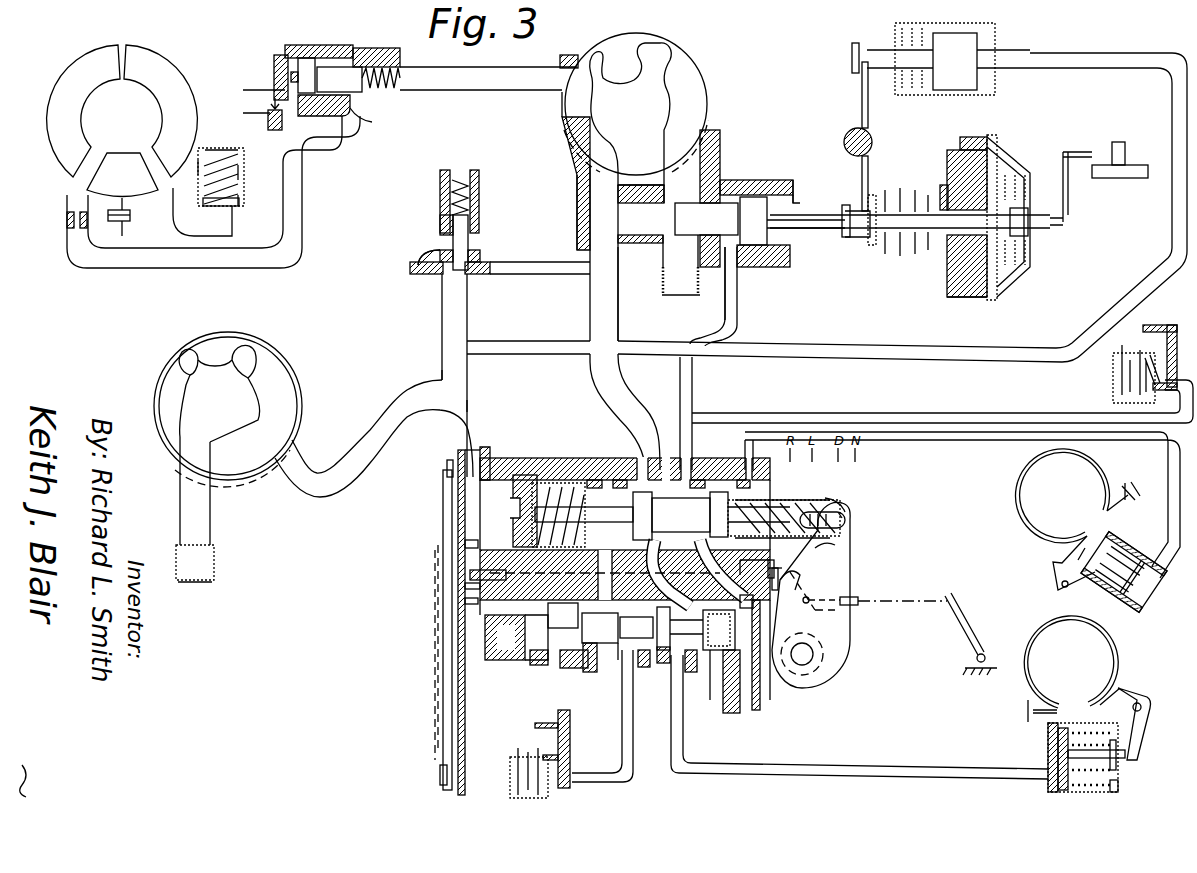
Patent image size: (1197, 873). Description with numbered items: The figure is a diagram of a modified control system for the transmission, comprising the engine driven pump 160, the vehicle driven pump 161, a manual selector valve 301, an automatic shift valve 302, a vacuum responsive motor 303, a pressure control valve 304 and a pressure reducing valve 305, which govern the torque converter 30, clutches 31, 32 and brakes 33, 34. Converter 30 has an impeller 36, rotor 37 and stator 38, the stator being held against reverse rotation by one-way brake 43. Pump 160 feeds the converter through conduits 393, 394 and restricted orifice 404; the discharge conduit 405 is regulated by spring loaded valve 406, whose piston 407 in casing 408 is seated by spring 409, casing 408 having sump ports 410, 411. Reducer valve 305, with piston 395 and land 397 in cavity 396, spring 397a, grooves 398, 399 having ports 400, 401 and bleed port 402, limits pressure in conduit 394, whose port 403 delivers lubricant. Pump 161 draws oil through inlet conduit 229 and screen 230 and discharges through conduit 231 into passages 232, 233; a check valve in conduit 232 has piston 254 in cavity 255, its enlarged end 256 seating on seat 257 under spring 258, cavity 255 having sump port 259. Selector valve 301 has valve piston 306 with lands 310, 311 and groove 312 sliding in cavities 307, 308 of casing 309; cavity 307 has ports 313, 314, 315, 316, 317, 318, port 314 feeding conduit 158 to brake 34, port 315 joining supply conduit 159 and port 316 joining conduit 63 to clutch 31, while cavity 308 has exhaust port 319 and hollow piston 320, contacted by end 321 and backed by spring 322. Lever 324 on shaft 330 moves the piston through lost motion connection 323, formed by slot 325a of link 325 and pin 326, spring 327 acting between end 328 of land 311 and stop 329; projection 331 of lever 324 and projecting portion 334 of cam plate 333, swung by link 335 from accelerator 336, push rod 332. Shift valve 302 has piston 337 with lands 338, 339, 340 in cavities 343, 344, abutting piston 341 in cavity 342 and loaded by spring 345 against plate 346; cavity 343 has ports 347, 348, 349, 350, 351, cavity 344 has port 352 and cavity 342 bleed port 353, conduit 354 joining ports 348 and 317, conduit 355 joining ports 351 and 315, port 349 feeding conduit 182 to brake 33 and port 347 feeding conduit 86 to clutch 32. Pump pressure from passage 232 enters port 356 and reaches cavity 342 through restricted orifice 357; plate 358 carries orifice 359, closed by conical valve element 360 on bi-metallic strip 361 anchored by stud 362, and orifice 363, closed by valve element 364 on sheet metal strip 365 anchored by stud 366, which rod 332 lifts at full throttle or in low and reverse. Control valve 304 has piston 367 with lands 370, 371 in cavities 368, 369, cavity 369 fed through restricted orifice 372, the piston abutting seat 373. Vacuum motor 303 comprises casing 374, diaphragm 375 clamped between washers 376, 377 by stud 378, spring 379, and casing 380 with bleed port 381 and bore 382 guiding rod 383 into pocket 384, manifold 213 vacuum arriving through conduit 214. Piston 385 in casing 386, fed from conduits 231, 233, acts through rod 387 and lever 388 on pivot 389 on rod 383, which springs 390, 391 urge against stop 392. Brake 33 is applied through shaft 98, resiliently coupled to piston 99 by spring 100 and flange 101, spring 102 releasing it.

The hydraulic torque converter 30 is at (170, 45).
The vaned impeller element 36 is at (179, 110).
The vaned rotor or driven element 37 is at (66, 110).
The vaned stator or reaction element 38 is at (122, 194).
The one-way brake 43 is at (136, 226).
The restricted orifice 404 is at (72, 232).
The conduit 405 is at (202, 212).
The spring loaded valve 406 is at (258, 190).
The piston 407 is at (222, 206).
The cylindrical casing 408 is at (196, 165).
The compression spring 409 is at (240, 173).
The port 410 is at (220, 150).
The port 411 is at (242, 208).
The conduit 394 is at (303, 242).
The pressure reducing valve 305 is at (268, 36).
The cylindrical cavity 396 is at (340, 67).
The land 397 is at (305, 58).
The compression spring 397a is at (412, 78).
The groove 398 is at (274, 60).
The groove 399 is at (365, 50).
The port 400 is at (280, 85).
The port 401 is at (372, 118).
The bleed port 402 is at (318, 58).
The port 403 is at (283, 120).
The piston 395 is at (345, 137).
The conduit 393 is at (512, 90).
The engine driven pump 160 is at (696, 53).
The vehicle driven pump 161 is at (207, 324).
The fluid inlet conduit 229 is at (210, 508).
The screen 230 is at (214, 560).
The fluid outlet conduit 231 is at (312, 490).
The passage 232 is at (442, 383).
The passage 233 is at (1112, 60).
The pressure supply conduit 159 is at (590, 365).
The valve piston 254 is at (470, 240).
The cylindrical cavity 255 is at (440, 225).
The enlarged end 256 is at (490, 262).
The seat 257 is at (418, 258).
The compression spring 258 is at (478, 195).
The port 259 is at (462, 170).
The pressure control valve 304 is at (749, 172).
The valve casing 309 is at (795, 183).
The piston 367 is at (674, 233).
The cylindrical cavity 368 is at (695, 203).
The cylindrical cavity 369 is at (800, 200).
The land 370 is at (690, 235).
The land 371 is at (760, 262).
The restricted orifice 372 is at (740, 282).
The seat 373 is at (662, 236).
The pocket 384 is at (780, 228).
The piston 385 is at (981, 61).
The cylindrical casing 386 is at (996, 33).
The rod 387 is at (878, 50).
The lever 388 is at (860, 80).
The pivot 389 is at (850, 133).
The compression spring 390 is at (905, 82).
The vacuum responsive motor 303 is at (1082, 226).
The sheet metal casing 374 is at (1012, 165).
The flexible diaphragm 375 is at (1000, 282).
The metal washer 376 is at (950, 270).
The metal washer 377 is at (990, 155).
The stud 378 is at (1018, 236).
The spring 379 is at (1022, 285).
The casing 380 is at (965, 302).
The bleed port 381 is at (955, 160).
The bore 382 is at (940, 186).
The rod 383 is at (900, 256).
The compression spring 391 is at (898, 194).
The stop 392 is at (868, 245).
The fuel intake manifold 213 is at (1135, 167).
The conduit 214 is at (1070, 152).
The friction clutch 31 is at (1093, 386).
The friction clutch 32 is at (499, 749).
The friction brake 33 is at (1017, 695).
The friction brake 34 is at (1014, 456).
The pressure line 63 is at (818, 410).
The conduit 158 is at (918, 432).
The conduit 182 is at (790, 774).
The conduit 86 is at (635, 775).
The shaft 98 is at (1128, 754).
The piston 99 is at (1055, 790).
The coil spring 100 is at (1080, 782).
The flange 101 is at (1116, 768).
The coil spring 102 is at (1112, 795).
The manual selector valve 301 is at (890, 514).
The automatic shift valve 302 is at (779, 716).
The valve piston 306 is at (720, 493).
The cylindrical cavity 307 is at (770, 494).
The cylindrical cavity 308 is at (515, 476).
The land 310 is at (632, 515).
The land 311 is at (710, 512).
The groove 312 is at (660, 540).
The port 313 is at (605, 545).
The port 314 is at (630, 480).
The port 315 is at (632, 468).
The port 316 is at (698, 476).
The port 317 is at (672, 537).
The port 318 is at (740, 477).
The port 319 is at (575, 465).
The hollow piston 320 is at (510, 503).
The end 321 is at (510, 518).
The compression spring 322 is at (512, 540).
The lost motion connection 323 is at (850, 513).
The lever 324 is at (852, 572).
The link 325 is at (784, 518).
The slot 325a is at (848, 538).
The pin 326 is at (848, 520).
The compression spring 327 is at (822, 548).
The end 328 is at (765, 488).
The stop 329 is at (833, 498).
The shaft 330 is at (812, 660).
The projection 331 is at (802, 577).
The rod 332 is at (470, 572).
The cam plate 333 is at (845, 606).
The projecting portion 334 is at (800, 565).
The link 335 is at (934, 596).
The accelerator pedal 336 is at (962, 628).
The piston 337 is at (718, 700).
The land 338 is at (646, 667).
The land 339 is at (704, 630).
The land 340 is at (590, 672).
The piston 341 is at (550, 668).
The cavity 342 is at (530, 661).
The cavity 343 is at (636, 627).
The cavity 344 is at (600, 628).
The compression spring 345 is at (777, 592).
The plate 346 is at (760, 712).
The port 347 is at (624, 660).
The port 348 is at (633, 608).
The port 349 is at (668, 665).
The port 350 is at (712, 668).
The port 351 is at (753, 602).
The port 352 is at (563, 615).
The port 353 is at (572, 668).
The conduit 354 is at (680, 628).
The conduit 355 is at (760, 560).
The port 356 is at (465, 442).
The restricted orifice 357 is at (465, 545).
The plate 358 is at (458, 705).
The orifice 359 is at (480, 640).
The conical valve element 360 is at (452, 639).
The bi-metallic strip 361 is at (443, 725).
The stud 362 is at (440, 772).
The orifice 363 is at (465, 601).
The valve element 364 is at (465, 586).
The sheet metal strip 365 is at (455, 497).
The stud 366 is at (446, 468).